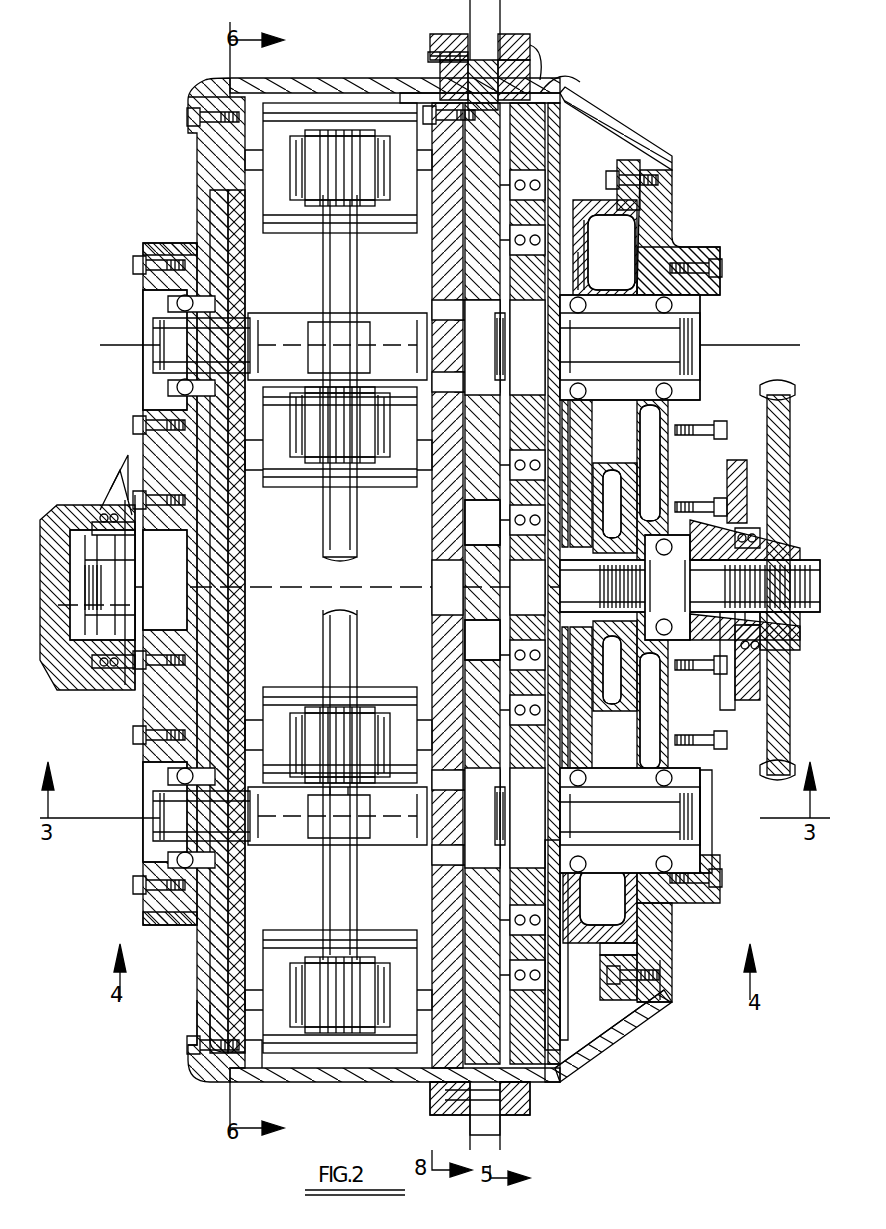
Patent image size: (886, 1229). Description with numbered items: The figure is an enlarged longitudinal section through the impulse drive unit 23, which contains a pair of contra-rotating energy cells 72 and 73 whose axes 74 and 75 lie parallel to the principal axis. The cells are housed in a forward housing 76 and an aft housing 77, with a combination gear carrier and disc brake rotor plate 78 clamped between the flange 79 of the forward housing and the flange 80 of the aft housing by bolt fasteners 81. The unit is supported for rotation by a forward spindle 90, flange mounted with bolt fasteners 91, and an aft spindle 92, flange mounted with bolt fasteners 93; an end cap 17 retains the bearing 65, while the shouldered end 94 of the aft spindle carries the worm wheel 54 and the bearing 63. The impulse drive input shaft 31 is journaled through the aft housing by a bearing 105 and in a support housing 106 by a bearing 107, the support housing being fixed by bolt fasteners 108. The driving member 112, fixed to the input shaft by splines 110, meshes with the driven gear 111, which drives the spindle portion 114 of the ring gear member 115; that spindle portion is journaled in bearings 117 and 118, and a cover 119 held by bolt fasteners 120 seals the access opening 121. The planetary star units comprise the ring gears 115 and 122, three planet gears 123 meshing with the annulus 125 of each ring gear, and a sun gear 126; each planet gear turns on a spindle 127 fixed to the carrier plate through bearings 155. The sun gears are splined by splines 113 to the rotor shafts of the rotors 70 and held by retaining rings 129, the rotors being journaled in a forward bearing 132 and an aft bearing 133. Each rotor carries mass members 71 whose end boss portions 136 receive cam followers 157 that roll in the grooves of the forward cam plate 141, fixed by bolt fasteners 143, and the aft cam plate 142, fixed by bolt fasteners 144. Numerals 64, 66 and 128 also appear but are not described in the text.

The end cap 17 is at (60, 662).
The impulse drive unit 23 is at (615, 1038).
The impulse drive input shaft 31 is at (782, 630).
The worm wheel 54 is at (778, 388).
The bearing 63 is at (762, 532).
The bracket 64 is at (745, 525).
The bearing 65 is at (108, 514).
The ring 66 is at (112, 490).
The energy cell rotor 70 is at (322, 550).
The mass member 71 is at (300, 227).
The energy cell 72 is at (345, 1082).
The energy cell 73 is at (372, 313).
The axis of energy cell 74 is at (72, 799).
The axis of energy cell 75 is at (128, 345).
The forward housing 76 is at (196, 1050).
The aft housing 77 is at (668, 994).
The combination gear carrier and disc brake rotor plate 78 is at (475, 26).
The flange 79 is at (432, 40).
The flange 80 is at (525, 40).
The bolt fasteners 81 is at (428, 58).
The spindle 90 is at (92, 680).
The bolt fasteners 91 is at (130, 700).
The spindle 92 is at (770, 697).
The bolt fasteners 93 is at (720, 706).
The shouldered end 94 is at (765, 667).
The bearing 105 is at (690, 677).
The support housing 106 is at (575, 198).
The bearing 107 is at (590, 542).
The bolt fasteners 108 is at (612, 165).
The splines 110 is at (660, 902).
The driven gear 111 is at (620, 917).
The driving member 112 is at (598, 467).
The splines 113 is at (552, 970).
The spindle portion 114 is at (640, 957).
The ring gear member 115 is at (560, 1062).
The bearing 117 is at (705, 770).
The bearing 118 is at (578, 252).
The cover 119 is at (165, 248).
The bolt fasteners 120 is at (722, 268).
The access opening 121 is at (700, 845).
The ring gear 122 is at (560, 88).
The planet gears 123 is at (548, 1004).
The annulus 125 is at (550, 1082).
The sun gear 126 is at (478, 295).
The spindle 127 is at (455, 657).
The shaft sleeve 128 is at (250, 313).
The retaining rings 129 is at (640, 230).
The bearing 132 is at (215, 690).
The bearing 133 is at (440, 800).
The end boss portions 136 is at (222, 1080).
The forward cam plate 141 is at (245, 540).
The aft cam plate 142 is at (465, 550).
The bolt fasteners 143 is at (250, 92).
The bolt fasteners 144 is at (430, 82).
The bearings 155 is at (510, 230).
The cam followers 157 is at (210, 1020).